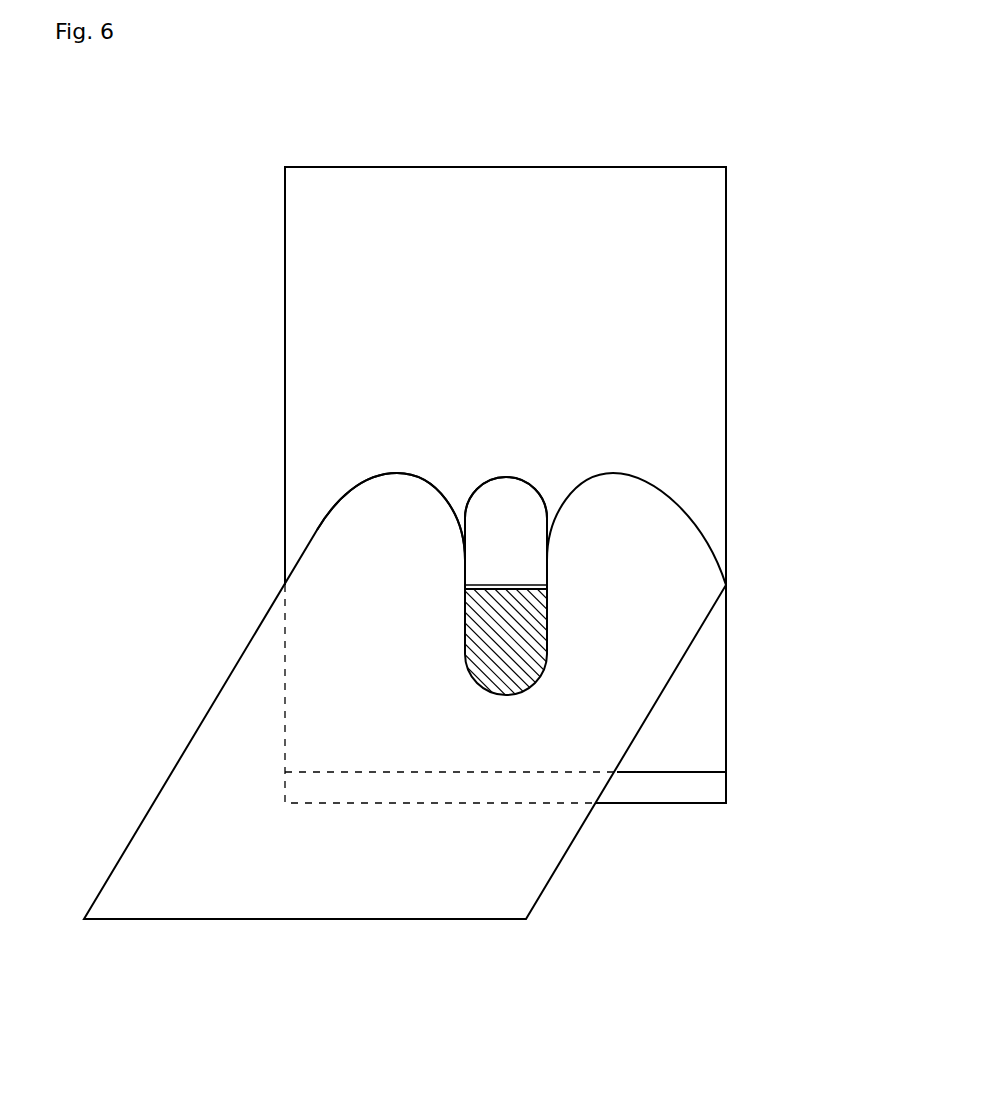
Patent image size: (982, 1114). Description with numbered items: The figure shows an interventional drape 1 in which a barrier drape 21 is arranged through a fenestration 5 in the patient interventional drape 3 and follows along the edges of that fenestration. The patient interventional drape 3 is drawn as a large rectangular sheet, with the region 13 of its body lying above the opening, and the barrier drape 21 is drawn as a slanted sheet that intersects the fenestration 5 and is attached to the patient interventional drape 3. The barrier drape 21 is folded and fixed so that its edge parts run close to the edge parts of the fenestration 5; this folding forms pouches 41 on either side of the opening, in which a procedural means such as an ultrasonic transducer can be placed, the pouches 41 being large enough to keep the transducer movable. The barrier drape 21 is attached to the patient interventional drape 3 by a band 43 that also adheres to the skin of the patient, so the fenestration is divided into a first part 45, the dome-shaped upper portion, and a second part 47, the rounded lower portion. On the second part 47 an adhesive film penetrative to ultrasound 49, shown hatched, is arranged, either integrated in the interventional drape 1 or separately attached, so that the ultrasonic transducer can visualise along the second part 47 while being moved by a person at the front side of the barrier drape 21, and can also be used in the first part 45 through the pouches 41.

The interventional drape 1 is at (468, 526).
The patient interventional drape 3 is at (728, 286).
The sheet body region 13 is at (661, 330).
The fenestration 5 is at (539, 490).
The barrier drape 21 is at (256, 694).
The pouches 41 is at (382, 537).
The band 43 is at (550, 586).
The first part of the fenestration 45 is at (518, 537).
The second part of the fenestration 47 is at (549, 650).
The adhesive film penetrative to ultrasound 49 is at (516, 619).